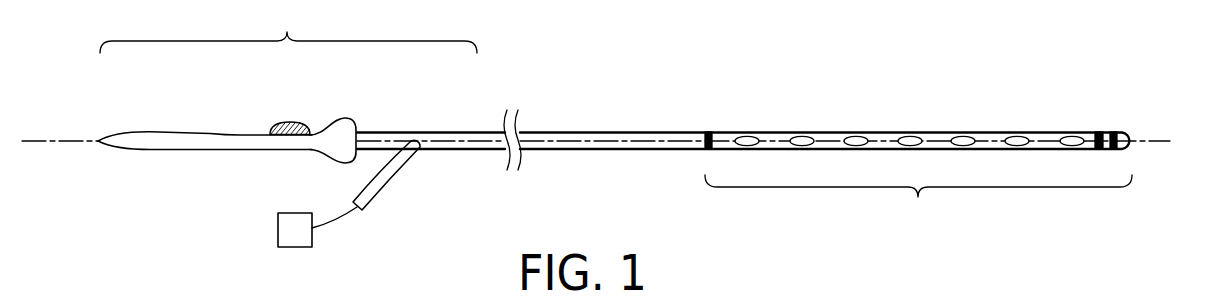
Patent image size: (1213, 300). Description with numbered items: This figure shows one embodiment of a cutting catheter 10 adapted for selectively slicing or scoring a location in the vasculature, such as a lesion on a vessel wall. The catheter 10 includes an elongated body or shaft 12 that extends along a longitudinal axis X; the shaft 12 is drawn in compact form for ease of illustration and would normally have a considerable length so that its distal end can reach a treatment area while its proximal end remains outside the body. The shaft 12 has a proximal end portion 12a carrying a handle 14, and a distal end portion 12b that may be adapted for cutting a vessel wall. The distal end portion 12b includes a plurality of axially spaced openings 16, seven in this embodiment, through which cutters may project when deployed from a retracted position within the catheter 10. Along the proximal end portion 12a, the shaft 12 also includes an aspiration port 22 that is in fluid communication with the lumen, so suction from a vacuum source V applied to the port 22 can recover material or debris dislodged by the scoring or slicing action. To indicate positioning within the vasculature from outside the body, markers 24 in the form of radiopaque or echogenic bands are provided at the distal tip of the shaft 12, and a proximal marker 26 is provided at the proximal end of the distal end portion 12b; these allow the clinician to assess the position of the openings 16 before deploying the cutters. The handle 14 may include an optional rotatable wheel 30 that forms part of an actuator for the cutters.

The cutting catheter 10 is at (814, 67).
The shaft 12 is at (594, 131).
The proximal end portion 12a is at (288, 28).
The distal end portion 12b is at (918, 204).
The handle 14 is at (203, 151).
The openings 16 is at (907, 133).
The aspiration port 22 is at (395, 187).
The markers 24 is at (1100, 131).
The proximal markers 26 is at (709, 131).
The rotatable wheel 30 is at (290, 122).
The vacuum source V is at (278, 232).
The longitudinal axis X is at (63, 140).